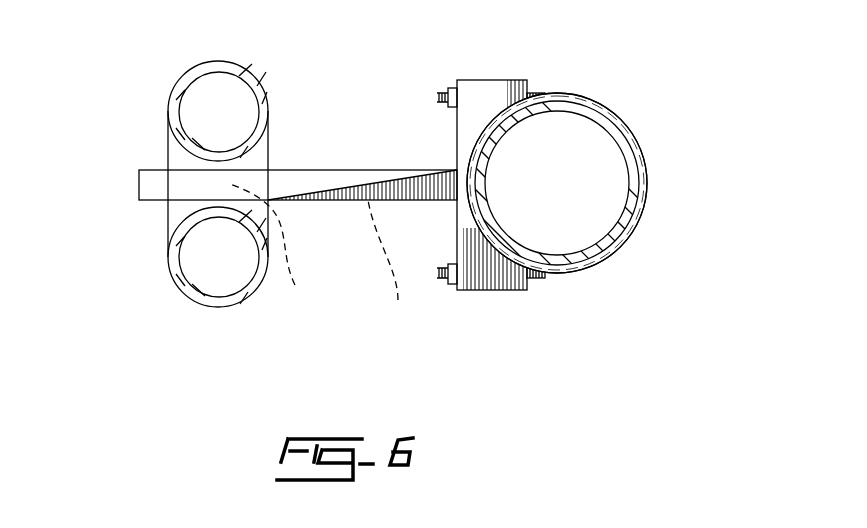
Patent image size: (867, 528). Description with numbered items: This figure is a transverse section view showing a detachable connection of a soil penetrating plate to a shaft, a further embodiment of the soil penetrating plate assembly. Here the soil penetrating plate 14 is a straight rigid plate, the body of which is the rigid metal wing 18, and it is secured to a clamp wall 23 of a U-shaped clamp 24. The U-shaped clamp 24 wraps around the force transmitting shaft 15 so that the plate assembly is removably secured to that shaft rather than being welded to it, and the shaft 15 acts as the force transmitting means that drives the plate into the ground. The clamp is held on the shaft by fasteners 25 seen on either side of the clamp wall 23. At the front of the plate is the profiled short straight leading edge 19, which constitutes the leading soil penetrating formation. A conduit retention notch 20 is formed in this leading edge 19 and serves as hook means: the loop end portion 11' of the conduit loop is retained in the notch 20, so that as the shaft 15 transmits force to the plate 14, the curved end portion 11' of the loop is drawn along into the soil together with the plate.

The loop end portion 11' is at (160, 184).
The soil penetrating plate 14 is at (360, 170).
The force transmitting shaft 15 is at (585, 113).
The rigid metal wing 18 is at (327, 178).
The leading edge 19 is at (390, 266).
The conduit retention notch 20 is at (274, 247).
The clamp wall 23 is at (488, 103).
The U-shaped clamp 24 is at (647, 178).
The screws 25 is at (448, 86).